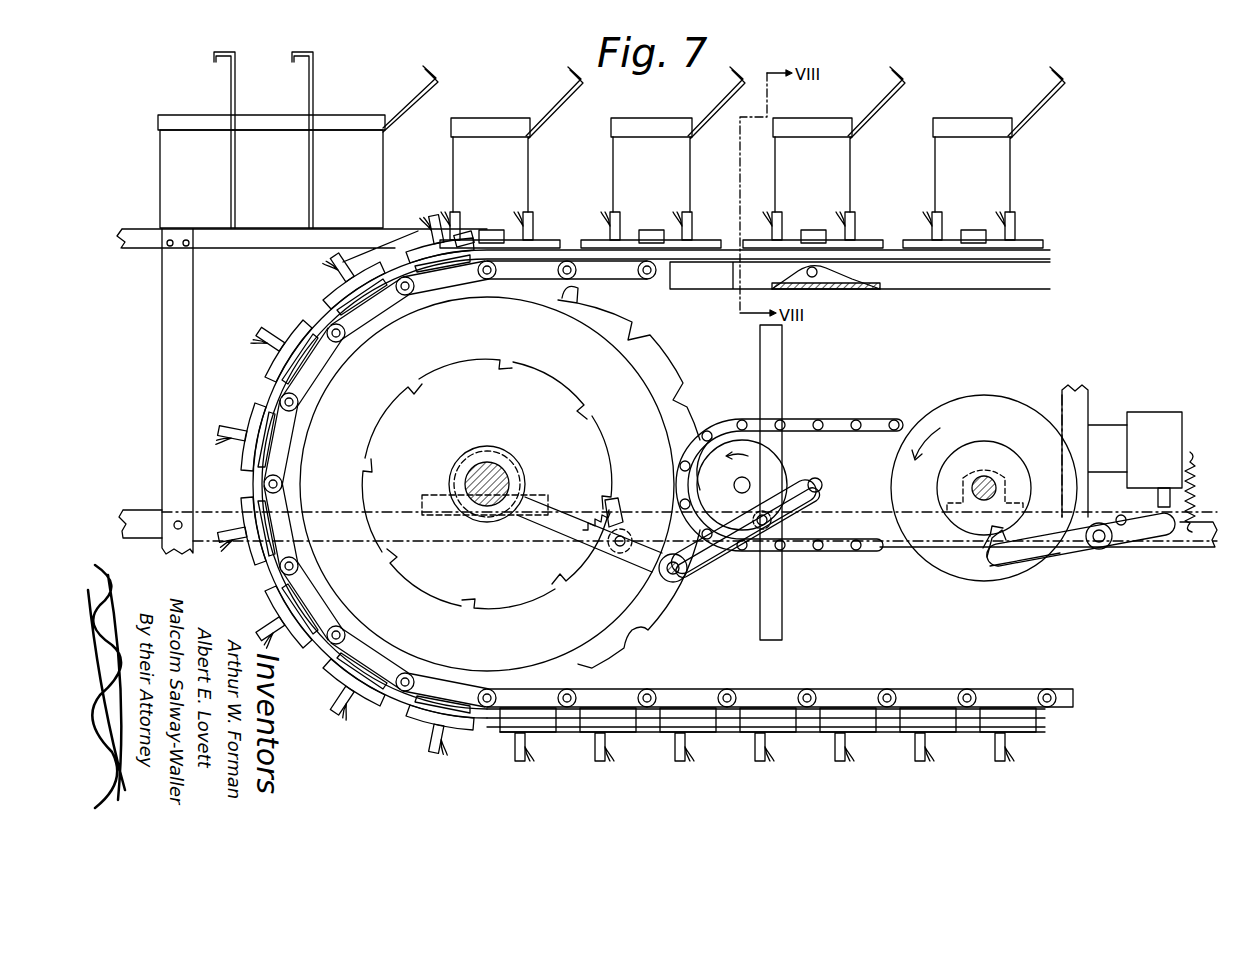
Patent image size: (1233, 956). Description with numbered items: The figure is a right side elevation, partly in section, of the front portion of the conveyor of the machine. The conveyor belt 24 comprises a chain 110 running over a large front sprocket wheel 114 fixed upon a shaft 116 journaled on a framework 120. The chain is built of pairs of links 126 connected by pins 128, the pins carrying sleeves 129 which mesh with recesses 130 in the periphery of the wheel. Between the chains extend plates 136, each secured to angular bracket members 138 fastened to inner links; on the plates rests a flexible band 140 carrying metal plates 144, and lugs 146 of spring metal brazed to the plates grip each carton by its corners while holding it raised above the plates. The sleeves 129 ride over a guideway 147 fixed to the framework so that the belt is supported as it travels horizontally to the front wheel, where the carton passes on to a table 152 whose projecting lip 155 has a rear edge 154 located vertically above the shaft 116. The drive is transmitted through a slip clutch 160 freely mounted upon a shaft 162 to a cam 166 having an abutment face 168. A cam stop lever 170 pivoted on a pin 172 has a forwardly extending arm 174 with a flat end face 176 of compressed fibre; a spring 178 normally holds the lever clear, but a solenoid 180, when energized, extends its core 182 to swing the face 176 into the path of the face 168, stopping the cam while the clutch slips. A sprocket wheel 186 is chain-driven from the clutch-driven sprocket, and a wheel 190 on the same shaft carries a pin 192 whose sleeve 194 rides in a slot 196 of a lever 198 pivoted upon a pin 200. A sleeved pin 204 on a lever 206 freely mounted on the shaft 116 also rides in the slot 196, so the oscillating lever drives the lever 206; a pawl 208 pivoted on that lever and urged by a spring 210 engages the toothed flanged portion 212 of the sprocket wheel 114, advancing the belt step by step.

The conveyor belt 24 is at (852, 682).
The chain 110 is at (1082, 702).
The large front sprocket wheel 114 is at (328, 402).
The shaft 116 is at (470, 472).
The framework 120 is at (168, 451).
The links 126 is at (687, 690).
The pins 128 is at (806, 690).
The sleeves 129 is at (966, 690).
The recesses 130 is at (642, 333).
The plates 136 is at (1042, 720).
The angular bracket members 138 is at (1042, 712).
The band 140 is at (1043, 728).
The metal plates 144 is at (1045, 733).
The lugs 146 is at (840, 222).
The guideway 147 is at (965, 290).
The table 152 is at (143, 232).
The rear edge 154 is at (476, 232).
The projecting lip 155 is at (430, 232).
The slip clutch 160 is at (1022, 408).
The shaft 162 is at (986, 477).
The cam 166 is at (958, 525).
The abutment face 168 is at (735, 483).
The cam stop lever 170 is at (1145, 532).
The pin 172 is at (1100, 548).
The forwardly extending arm 174 is at (1057, 550).
The flat end face 176 is at (987, 560).
The spring 178 is at (1193, 505).
The solenoid 180 is at (1160, 410).
The core 182 is at (1157, 500).
The sprocket wheel 186 is at (795, 432).
The wheel 190 is at (710, 452).
The pin 192 is at (782, 570).
The sleeve 194 is at (760, 520).
The slot 196 is at (705, 552).
The lever 198 is at (800, 503).
The pin 200 is at (822, 487).
The sleeved pin 204 is at (686, 582).
The lever 206 is at (560, 497).
The pawl 208 is at (622, 535).
The spring 210 is at (598, 505).
The flanged portion 212 is at (500, 597).